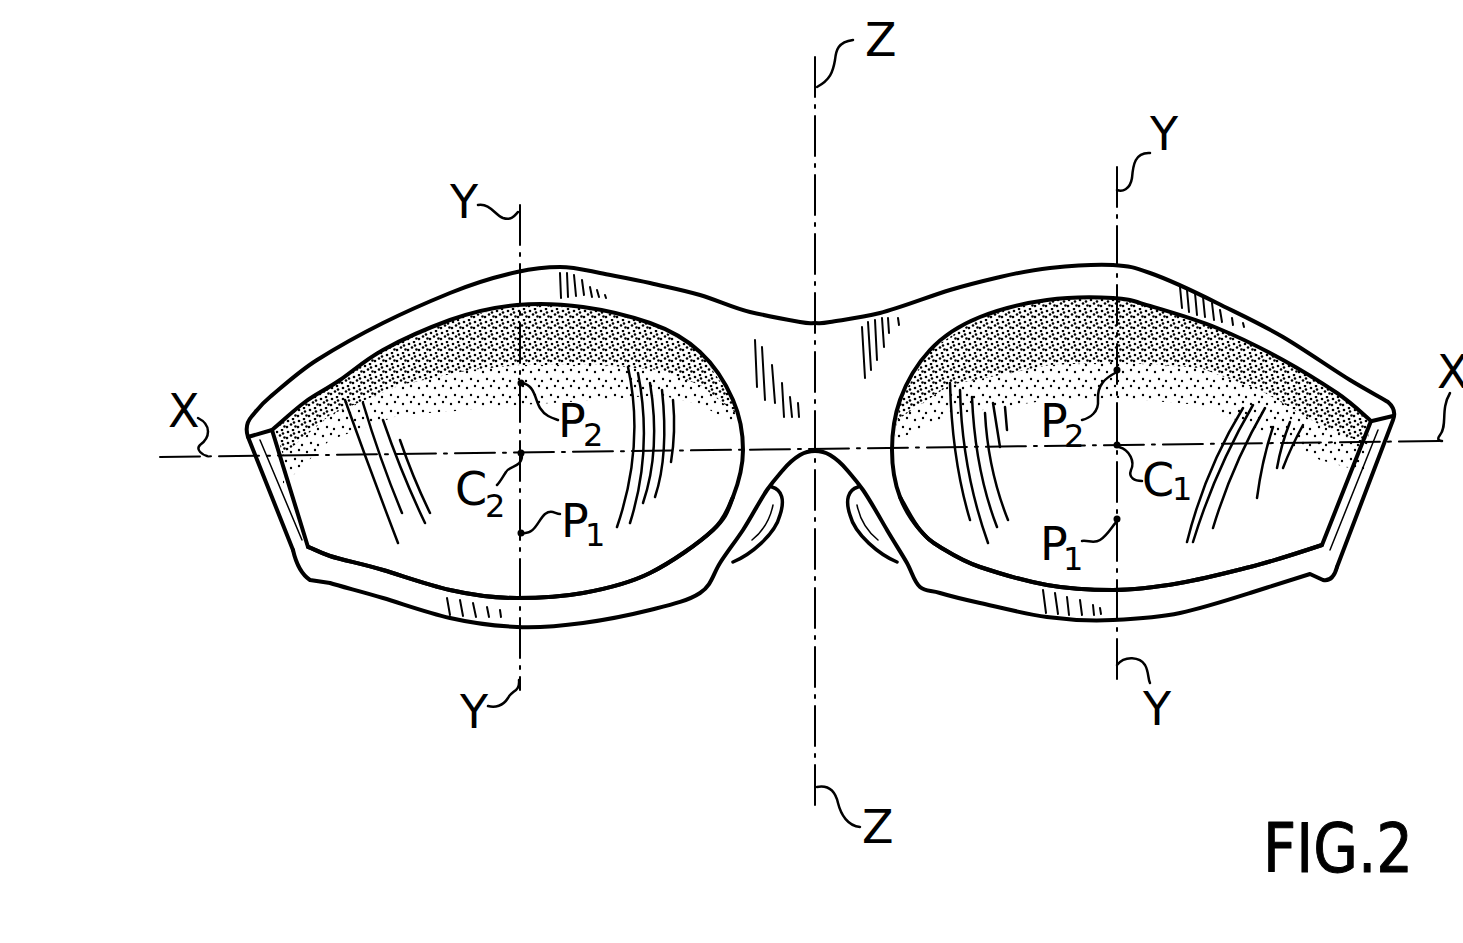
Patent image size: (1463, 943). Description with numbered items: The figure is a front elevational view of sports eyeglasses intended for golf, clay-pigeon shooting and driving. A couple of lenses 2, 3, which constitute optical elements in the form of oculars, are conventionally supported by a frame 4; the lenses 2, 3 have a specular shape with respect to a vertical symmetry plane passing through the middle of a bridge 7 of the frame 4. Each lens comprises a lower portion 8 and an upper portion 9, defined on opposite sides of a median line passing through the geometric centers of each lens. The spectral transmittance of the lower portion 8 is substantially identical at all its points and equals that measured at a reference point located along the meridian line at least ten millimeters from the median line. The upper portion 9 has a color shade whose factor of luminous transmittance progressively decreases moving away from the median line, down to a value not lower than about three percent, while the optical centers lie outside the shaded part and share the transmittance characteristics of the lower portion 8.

The lens 2 is at (1180, 553).
The lens 3 is at (433, 563).
The frame 4 is at (1017, 283).
The bridge 7 is at (777, 337).
The lower portion 8 is at (568, 580).
The upper portion 9 is at (617, 352).